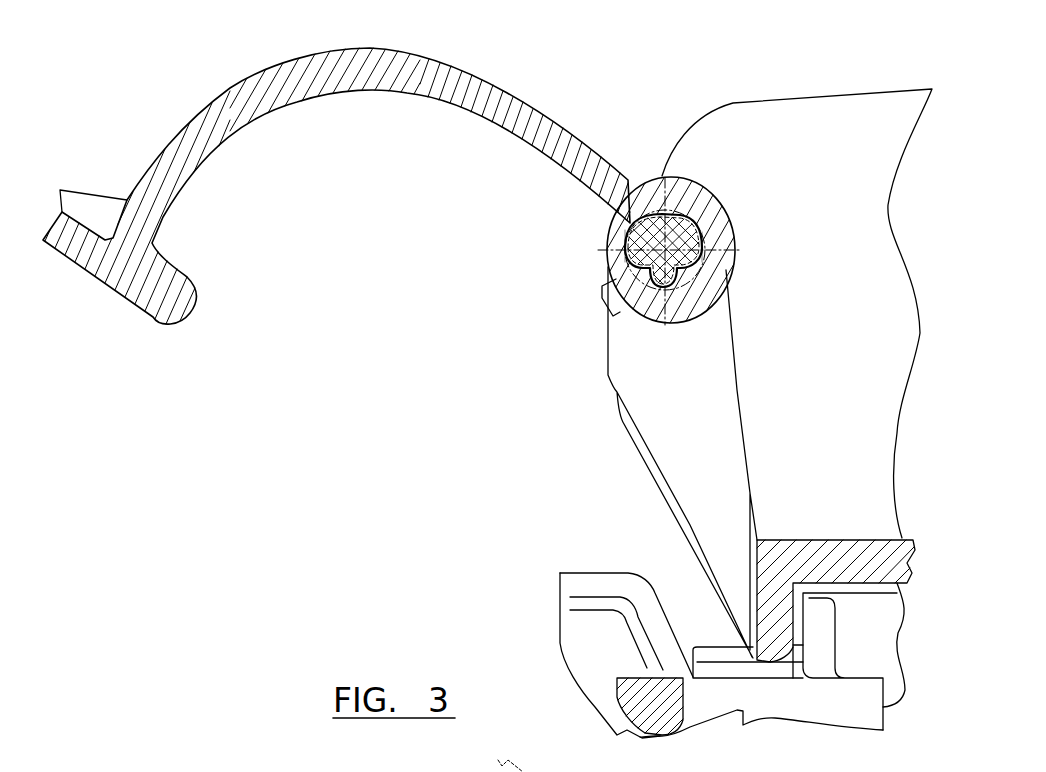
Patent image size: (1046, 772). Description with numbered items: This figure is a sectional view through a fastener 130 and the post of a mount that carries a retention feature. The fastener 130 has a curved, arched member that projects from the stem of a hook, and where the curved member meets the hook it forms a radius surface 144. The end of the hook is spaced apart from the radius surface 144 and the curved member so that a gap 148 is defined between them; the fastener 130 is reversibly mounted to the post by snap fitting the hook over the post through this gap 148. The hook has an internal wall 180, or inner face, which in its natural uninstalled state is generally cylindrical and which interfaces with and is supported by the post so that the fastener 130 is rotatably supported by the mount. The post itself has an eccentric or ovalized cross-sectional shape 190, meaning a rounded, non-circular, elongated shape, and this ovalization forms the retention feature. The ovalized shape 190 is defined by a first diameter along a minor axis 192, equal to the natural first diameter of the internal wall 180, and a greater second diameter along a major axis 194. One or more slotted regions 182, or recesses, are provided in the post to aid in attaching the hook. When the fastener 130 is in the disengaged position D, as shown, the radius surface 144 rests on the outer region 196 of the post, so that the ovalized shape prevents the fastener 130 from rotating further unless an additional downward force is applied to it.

The fastener 130 is at (400, 73).
The radius surface 144 is at (632, 218).
The gap 148 is at (612, 252).
The internal wall 180 is at (665, 213).
The slotted region 182 is at (645, 291).
The ovalized cross-sectional shape 190 is at (715, 247).
The minor axis 192 is at (627, 228).
The major axis 194 is at (712, 206).
The outer region 196 is at (625, 243).
The disengaged position D is at (333, 108).